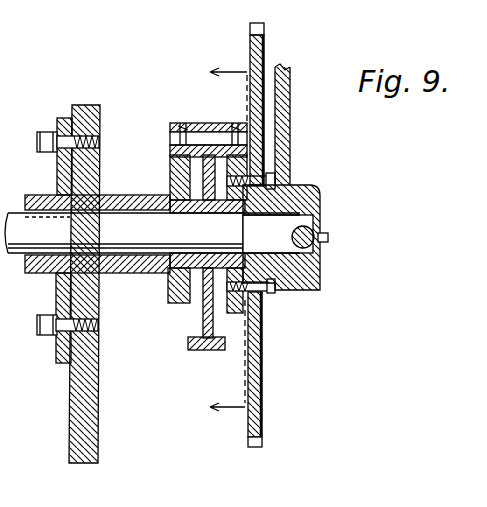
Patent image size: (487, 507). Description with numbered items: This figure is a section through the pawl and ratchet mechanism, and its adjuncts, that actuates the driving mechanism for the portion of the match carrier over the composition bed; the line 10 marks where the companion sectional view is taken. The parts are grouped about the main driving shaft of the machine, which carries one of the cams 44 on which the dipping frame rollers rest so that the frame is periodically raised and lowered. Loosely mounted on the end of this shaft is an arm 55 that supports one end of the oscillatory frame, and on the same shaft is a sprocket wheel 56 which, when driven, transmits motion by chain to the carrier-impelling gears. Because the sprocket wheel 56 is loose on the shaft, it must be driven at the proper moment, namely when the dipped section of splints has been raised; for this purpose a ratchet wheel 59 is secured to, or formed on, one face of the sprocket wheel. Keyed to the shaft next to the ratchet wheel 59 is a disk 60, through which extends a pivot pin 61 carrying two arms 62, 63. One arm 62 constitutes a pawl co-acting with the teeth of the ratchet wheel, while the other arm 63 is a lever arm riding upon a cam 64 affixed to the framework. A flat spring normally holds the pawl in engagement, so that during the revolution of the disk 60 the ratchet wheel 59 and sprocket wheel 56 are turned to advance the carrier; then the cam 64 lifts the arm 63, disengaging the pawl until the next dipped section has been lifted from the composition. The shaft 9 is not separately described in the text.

The shaft 9 is at (5, 212).
The section line 10 is at (228, 241).
The cam 44 is at (98, 368).
The arm 55 is at (292, 157).
The sprocket wheel 56 is at (267, 44).
The ratchet wheel 59 is at (240, 315).
The disk 60 is at (190, 303).
The pivot pin 61 is at (170, 138).
The arm 62 is at (234, 123).
The arm 63 is at (170, 123).
The cam 64 is at (170, 172).